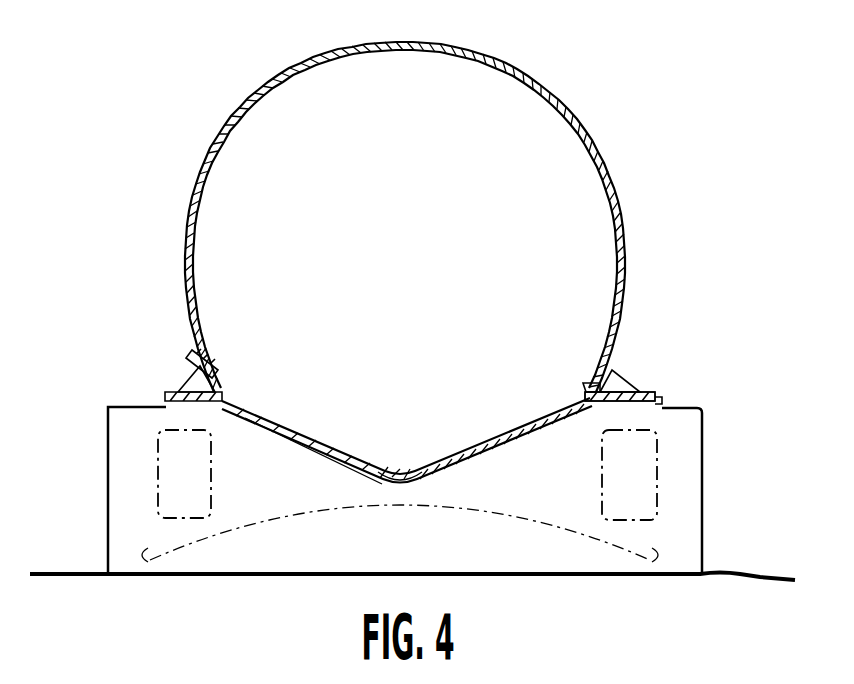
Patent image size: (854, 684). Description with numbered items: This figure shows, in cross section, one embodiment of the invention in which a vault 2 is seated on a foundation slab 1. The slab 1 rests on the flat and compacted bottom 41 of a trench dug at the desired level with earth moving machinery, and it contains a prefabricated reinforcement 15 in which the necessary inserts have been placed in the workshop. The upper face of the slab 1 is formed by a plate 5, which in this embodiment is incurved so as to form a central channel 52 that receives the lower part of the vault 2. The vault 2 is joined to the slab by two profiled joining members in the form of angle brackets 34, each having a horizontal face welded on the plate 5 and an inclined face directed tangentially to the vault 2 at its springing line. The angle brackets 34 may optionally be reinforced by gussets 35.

The slab 1 is at (703, 437).
The vault 2 is at (626, 228).
The plate 5 is at (303, 432).
The reinforcement 15 is at (640, 560).
The angle brackets 34 is at (622, 375).
The gussets 35 is at (628, 386).
The bottom 41 is at (718, 572).
The central channel 52 is at (402, 471).